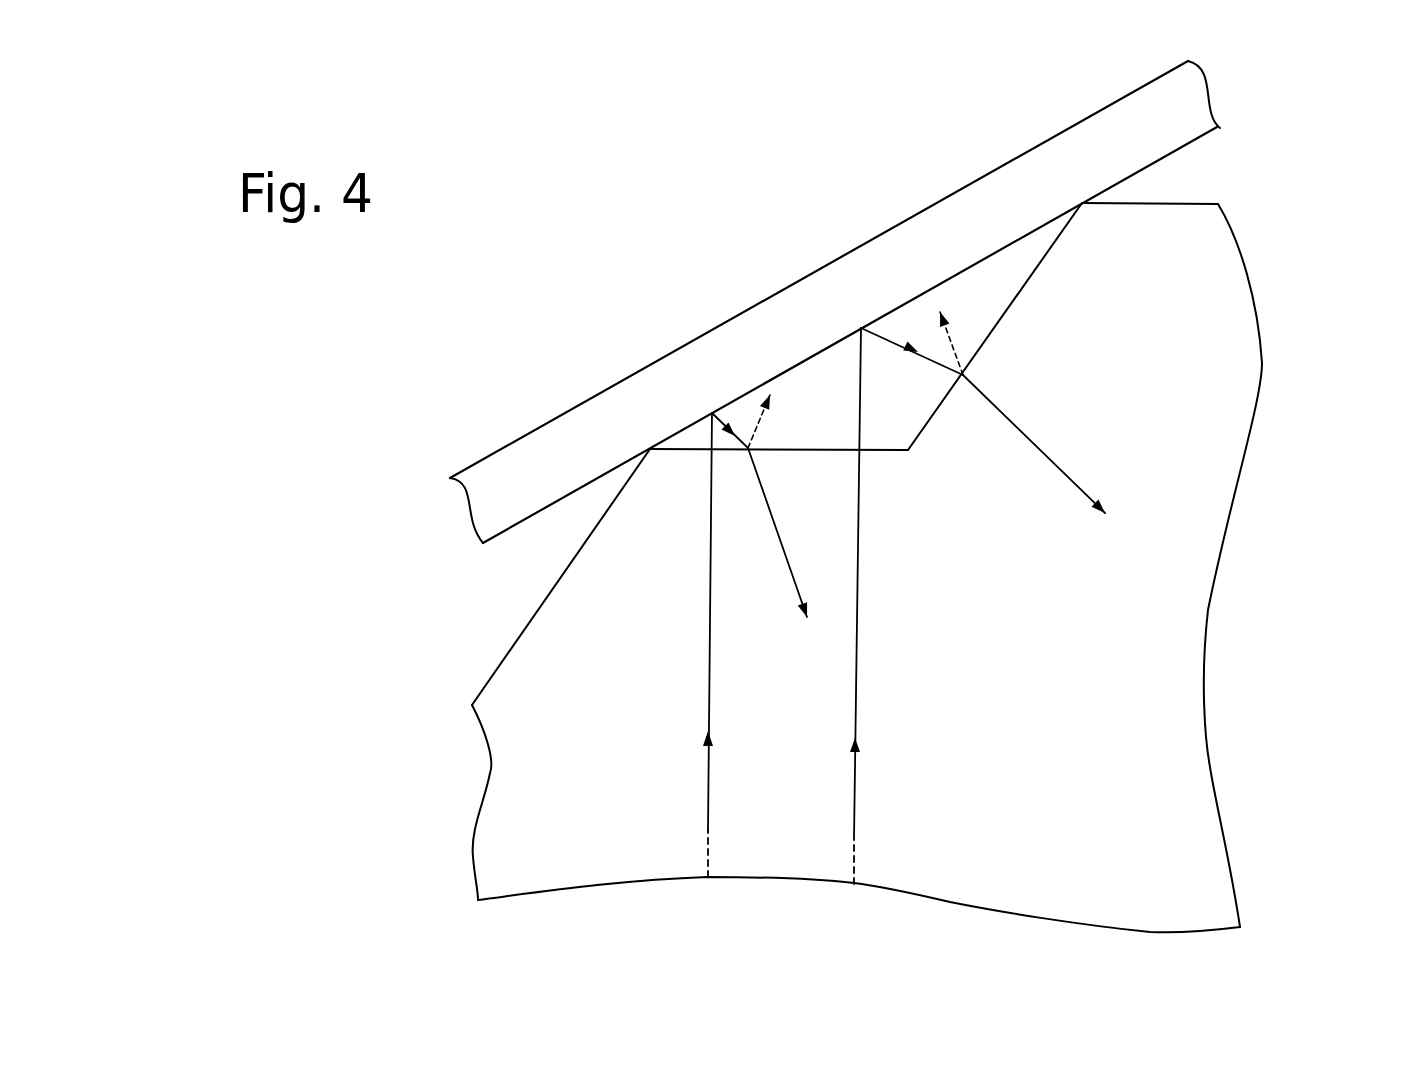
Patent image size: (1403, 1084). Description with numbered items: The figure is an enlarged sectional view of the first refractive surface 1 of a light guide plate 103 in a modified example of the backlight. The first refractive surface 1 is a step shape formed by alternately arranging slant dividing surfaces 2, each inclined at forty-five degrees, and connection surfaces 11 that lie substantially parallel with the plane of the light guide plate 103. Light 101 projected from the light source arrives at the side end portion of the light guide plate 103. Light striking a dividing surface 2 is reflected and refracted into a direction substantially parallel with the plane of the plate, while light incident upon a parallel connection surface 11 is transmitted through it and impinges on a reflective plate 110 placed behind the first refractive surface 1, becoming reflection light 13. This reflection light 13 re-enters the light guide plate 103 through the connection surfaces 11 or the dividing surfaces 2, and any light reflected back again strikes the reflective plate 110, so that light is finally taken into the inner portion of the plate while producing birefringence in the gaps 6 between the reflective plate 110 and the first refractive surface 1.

The first refractive surface 1 is at (904, 567).
The dividing surface 2 is at (543, 603).
The gap 6 is at (520, 572).
The connection surface 11 is at (883, 452).
The reflection light 13 is at (725, 420).
The light 101 is at (708, 798).
The light guide plate 103 is at (1215, 847).
The reflective plate 110 is at (557, 438).